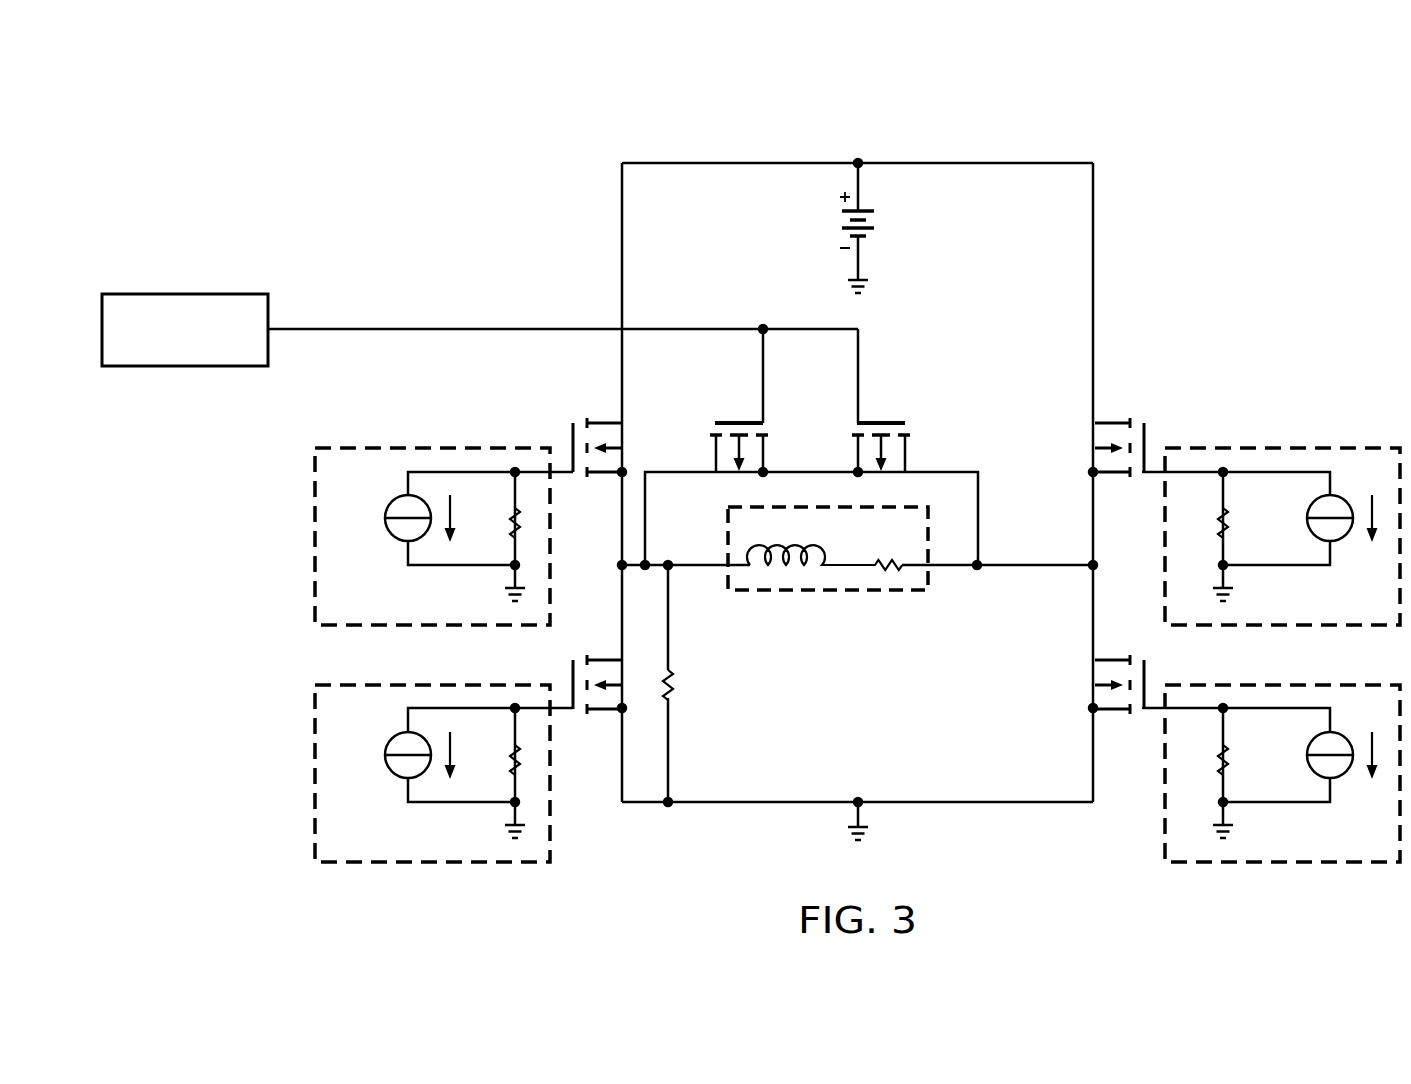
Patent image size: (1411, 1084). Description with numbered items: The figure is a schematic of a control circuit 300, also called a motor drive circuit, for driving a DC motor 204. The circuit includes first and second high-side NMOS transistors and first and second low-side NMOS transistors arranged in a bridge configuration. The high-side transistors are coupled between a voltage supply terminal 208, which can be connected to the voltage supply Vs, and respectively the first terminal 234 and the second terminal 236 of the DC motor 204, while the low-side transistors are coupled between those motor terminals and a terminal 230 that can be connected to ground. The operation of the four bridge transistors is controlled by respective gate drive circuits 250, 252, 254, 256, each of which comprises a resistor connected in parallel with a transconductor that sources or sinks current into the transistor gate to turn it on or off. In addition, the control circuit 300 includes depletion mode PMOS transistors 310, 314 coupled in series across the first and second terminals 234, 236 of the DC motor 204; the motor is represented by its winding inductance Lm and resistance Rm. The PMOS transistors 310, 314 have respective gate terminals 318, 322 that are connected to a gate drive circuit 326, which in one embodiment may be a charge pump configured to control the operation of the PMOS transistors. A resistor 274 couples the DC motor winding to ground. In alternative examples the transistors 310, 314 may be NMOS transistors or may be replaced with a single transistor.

The control circuit 300 is at (470, 121).
The voltage supply terminal 208 is at (860, 160).
The gate drive circuit 326 is at (185, 294).
The gate drive circuit 250 is at (401, 440).
The gate drive circuit 252 is at (1314, 440).
The gate drive circuit 254 is at (401, 870).
The gate drive circuit 256 is at (1314, 870).
The depletion mode PMOS transistor 310 is at (727, 416).
The depletion mode PMOS transistor 314 is at (896, 416).
The gate terminal 318 is at (764, 416).
The gate terminal 322 is at (856, 410).
The DC motor 204 is at (843, 600).
The first terminal 234 is at (715, 570).
The second terminal 236 is at (940, 570).
The resistor 274 is at (683, 685).
The terminal 230 is at (860, 797).